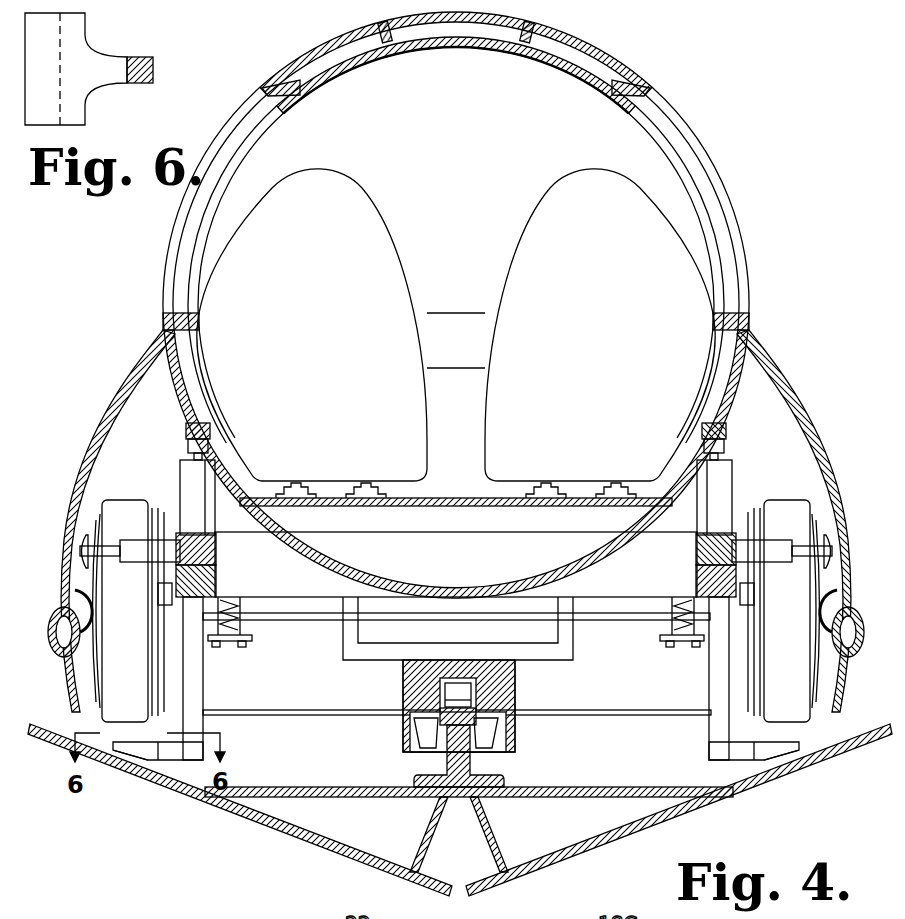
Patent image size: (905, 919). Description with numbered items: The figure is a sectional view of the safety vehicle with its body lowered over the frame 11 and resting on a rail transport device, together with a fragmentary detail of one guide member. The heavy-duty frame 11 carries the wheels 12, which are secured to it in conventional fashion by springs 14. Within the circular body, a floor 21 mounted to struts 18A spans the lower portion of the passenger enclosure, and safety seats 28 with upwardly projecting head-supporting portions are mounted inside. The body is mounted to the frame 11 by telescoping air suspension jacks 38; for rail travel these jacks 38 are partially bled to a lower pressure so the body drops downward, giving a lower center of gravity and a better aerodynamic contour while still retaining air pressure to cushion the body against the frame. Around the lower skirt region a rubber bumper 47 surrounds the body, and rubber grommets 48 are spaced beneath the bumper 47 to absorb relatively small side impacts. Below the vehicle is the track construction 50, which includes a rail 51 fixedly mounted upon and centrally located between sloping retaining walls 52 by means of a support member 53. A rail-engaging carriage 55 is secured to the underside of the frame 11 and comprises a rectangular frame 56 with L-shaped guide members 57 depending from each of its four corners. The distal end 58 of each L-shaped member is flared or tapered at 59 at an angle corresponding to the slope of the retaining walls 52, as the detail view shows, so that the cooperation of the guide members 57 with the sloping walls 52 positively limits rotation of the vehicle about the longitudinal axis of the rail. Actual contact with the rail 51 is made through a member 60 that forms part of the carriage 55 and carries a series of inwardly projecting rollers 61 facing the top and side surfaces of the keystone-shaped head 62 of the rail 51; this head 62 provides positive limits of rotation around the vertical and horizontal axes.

In FIG. 4, the frame 11 is at (452, 566).
In FIG. 4, the wheels 12 is at (136, 632).
In FIG. 4, the springs 14 is at (226, 640).
In FIG. 4, the strut 18A is at (258, 512).
In FIG. 4, the floor 21 is at (420, 507).
In FIG. 4, the safety seats 28 is at (305, 282).
In FIG. 4, the telescoping air suspension jacks 38 is at (180, 470).
In FIG. 4, the rubber bumper 47 is at (50, 634).
In FIG. 4, the rubber grommets 48 is at (75, 595).
In FIG. 4, the track construction 50 is at (222, 820).
In FIG. 4, the rail 51 is at (472, 762).
In FIG. 4, the sloping retaining walls 52 is at (298, 826).
In FIG. 4, the support member 53 is at (490, 815).
In FIG. 4, the rail-engaging carriage 55 is at (382, 736).
In FIG. 4, the rectangular frame 56 is at (308, 610).
In FIG. 6, the L-shaped guide members 57 is at (146, 57).
In FIG. 4, the L-shaped guide members 57 is at (193, 688).
In FIG. 6, the distal end 58 is at (55, 80).
In FIG. 4, the distal end 58 is at (133, 742).
In FIG. 4, the flared or tapered portion 59 is at (125, 755).
In FIG. 4, the rail-contacting member 60 is at (516, 692).
In FIG. 4, the rollers 61 is at (458, 690).
In FIG. 4, the rail head 62 is at (440, 758).